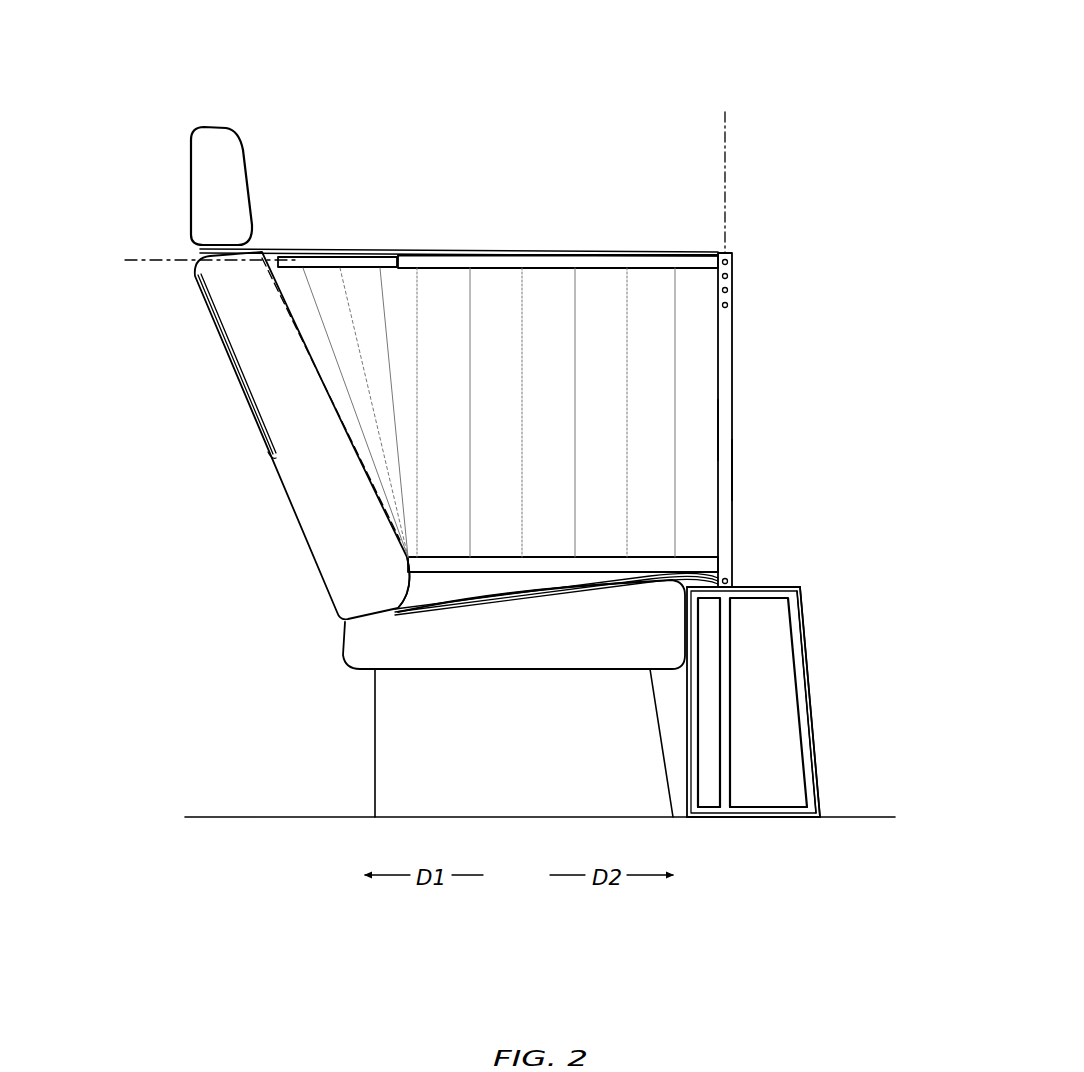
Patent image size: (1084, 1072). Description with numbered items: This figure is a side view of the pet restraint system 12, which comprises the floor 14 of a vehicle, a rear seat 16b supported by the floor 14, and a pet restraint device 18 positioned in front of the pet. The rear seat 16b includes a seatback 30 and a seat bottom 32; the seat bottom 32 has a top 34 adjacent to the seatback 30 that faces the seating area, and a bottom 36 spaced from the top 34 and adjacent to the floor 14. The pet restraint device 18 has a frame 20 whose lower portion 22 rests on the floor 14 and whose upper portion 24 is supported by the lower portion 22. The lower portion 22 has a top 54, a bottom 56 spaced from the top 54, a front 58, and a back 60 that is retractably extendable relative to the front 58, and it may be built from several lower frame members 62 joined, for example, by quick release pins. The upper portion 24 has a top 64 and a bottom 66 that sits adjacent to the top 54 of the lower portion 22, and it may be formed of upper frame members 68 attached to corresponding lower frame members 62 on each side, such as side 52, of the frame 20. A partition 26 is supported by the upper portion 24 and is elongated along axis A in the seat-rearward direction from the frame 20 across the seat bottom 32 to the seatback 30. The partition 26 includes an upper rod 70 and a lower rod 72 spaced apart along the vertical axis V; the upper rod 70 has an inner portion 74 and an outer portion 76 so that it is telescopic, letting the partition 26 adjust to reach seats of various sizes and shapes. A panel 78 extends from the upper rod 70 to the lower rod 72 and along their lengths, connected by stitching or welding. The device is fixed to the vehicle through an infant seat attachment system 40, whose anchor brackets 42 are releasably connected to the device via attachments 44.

The pet restraint system 12 is at (637, 62).
The floor 14 is at (265, 815).
The rear seat 16b is at (250, 150).
The pet restraint device 18 is at (780, 262).
The frame 20 is at (733, 385).
The lower portion 22 is at (775, 587).
The upper portion 24 is at (735, 332).
The partition 26 is at (583, 250).
The seatback 30 is at (302, 533).
The seat bottom 32 is at (652, 582).
The top 34 is at (542, 590).
The bottom 36 is at (515, 670).
The infant seat attachment system 40 is at (238, 438).
The anchor bracket 42 is at (268, 455).
The attachment 44 is at (215, 332).
The side 52 is at (733, 470).
The top 54 is at (755, 592).
The bottom 56 is at (792, 820).
The front 58 is at (685, 745).
The back 60 is at (812, 705).
The lower frame member 62 is at (797, 763).
The top 64 is at (731, 253).
The bottom 66 is at (733, 560).
The upper frame member 68 is at (733, 437).
The upper rod 70 is at (662, 252).
The lower rod 72 is at (492, 577).
The inner portion 74 is at (423, 254).
The outer portion 76 is at (342, 257).
The panel 78 is at (510, 403).